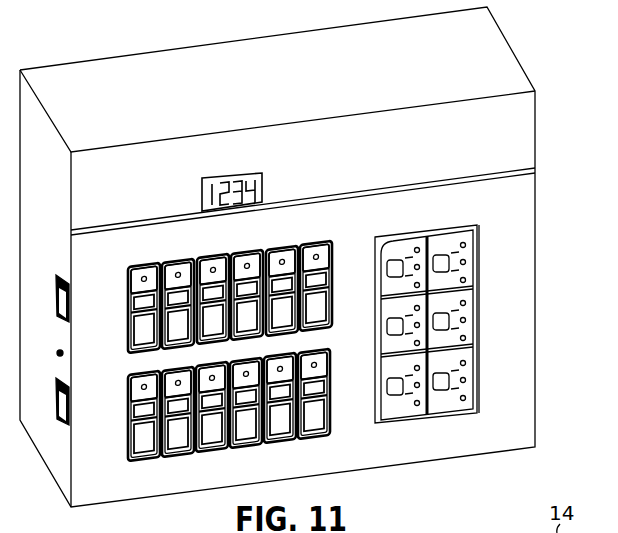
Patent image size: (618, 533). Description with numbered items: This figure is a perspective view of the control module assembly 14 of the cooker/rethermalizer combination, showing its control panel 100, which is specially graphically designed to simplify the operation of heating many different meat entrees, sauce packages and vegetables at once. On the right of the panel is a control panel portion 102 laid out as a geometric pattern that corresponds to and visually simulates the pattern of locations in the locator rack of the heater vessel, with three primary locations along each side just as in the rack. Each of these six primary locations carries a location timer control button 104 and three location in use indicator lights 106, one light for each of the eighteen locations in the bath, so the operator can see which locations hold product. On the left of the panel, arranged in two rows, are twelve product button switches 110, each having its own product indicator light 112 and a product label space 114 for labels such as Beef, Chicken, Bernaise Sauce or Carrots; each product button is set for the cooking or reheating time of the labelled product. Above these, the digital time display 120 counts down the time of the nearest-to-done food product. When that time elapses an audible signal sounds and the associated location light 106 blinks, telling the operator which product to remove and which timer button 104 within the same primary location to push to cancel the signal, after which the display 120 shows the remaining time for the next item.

The control module assembly 14 is at (522, 50).
The control panel 100 is at (507, 226).
The control panel portion 102 is at (476, 293).
The location timer control button 104 is at (440, 384).
The location in use indicator light 106 is at (468, 336).
The product button switch 110 is at (148, 330).
The product indicator light 112 is at (146, 273).
The product label space 114 is at (146, 300).
The digital time display 120 is at (264, 188).